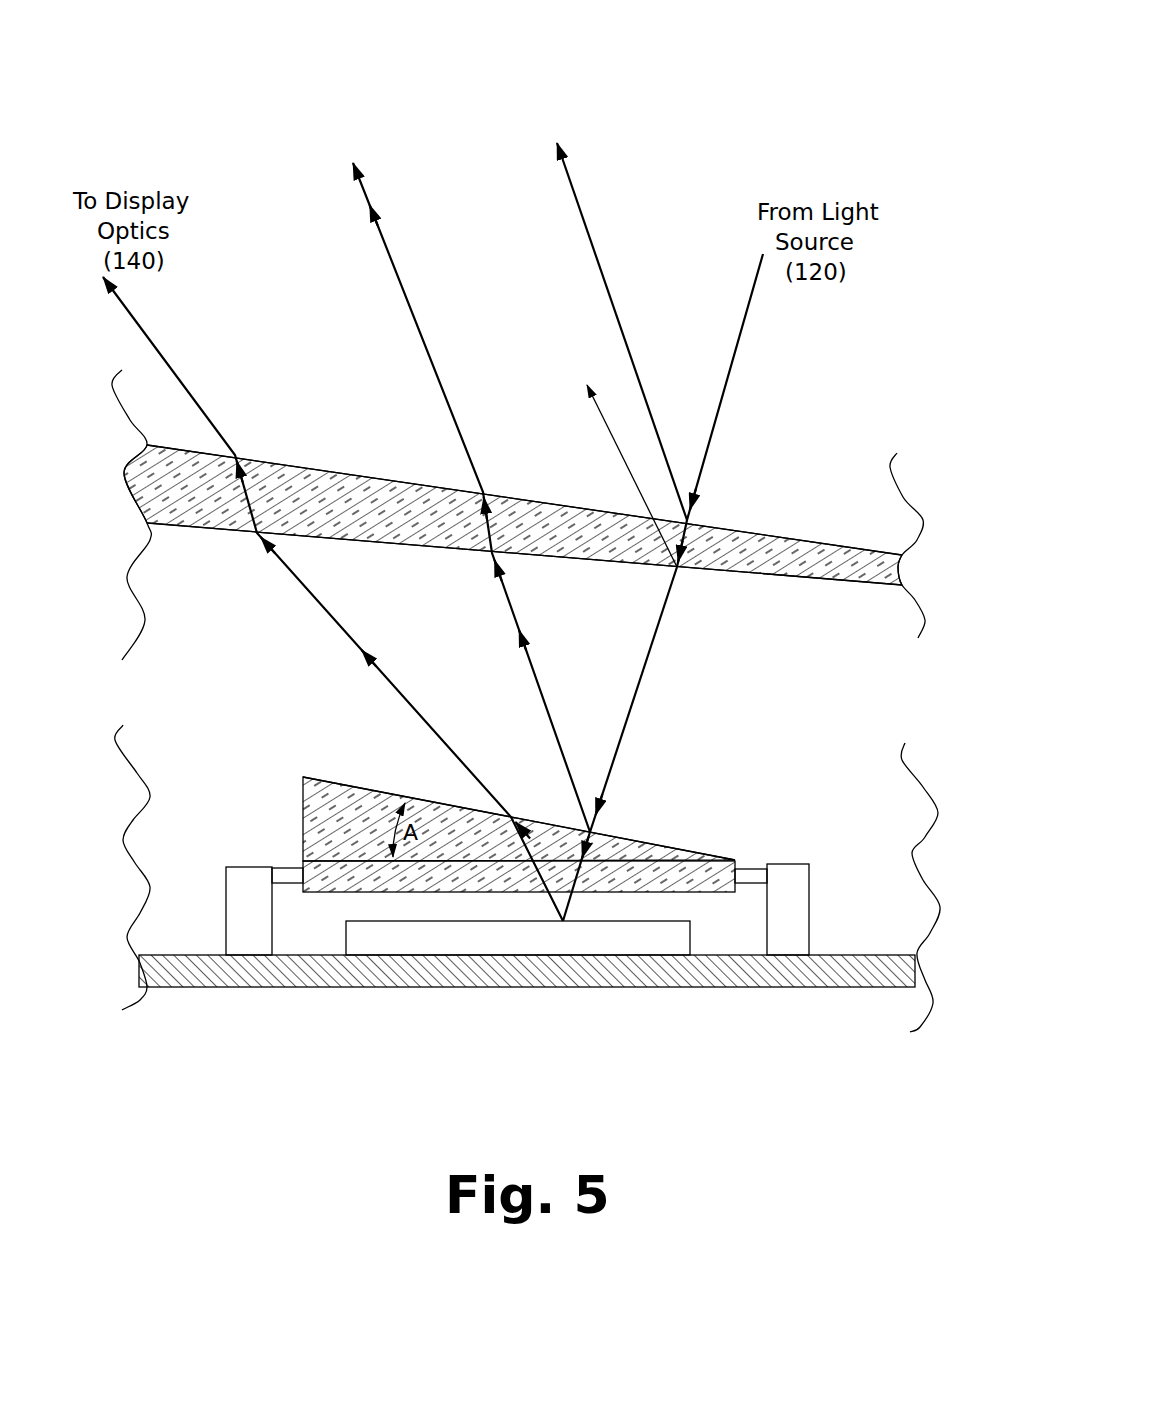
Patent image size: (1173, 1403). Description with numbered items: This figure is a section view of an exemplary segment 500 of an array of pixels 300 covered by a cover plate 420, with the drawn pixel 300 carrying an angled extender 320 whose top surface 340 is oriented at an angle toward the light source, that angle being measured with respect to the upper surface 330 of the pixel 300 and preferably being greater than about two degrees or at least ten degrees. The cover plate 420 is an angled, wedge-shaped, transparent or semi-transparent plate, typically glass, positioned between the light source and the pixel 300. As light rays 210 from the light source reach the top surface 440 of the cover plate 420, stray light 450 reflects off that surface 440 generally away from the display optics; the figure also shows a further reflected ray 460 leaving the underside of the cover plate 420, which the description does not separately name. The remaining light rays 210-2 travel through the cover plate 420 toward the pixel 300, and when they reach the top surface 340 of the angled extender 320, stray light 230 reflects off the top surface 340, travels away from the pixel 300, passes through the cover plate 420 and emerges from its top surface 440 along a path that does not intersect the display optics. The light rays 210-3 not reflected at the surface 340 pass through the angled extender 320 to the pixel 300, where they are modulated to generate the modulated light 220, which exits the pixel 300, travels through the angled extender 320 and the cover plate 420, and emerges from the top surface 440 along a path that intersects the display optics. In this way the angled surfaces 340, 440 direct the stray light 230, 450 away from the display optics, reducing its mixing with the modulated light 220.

The segment 500 is at (300, 98).
The pixel 300 is at (474, 992).
The angled extender 320 is at (330, 814).
The upper surface 330 is at (688, 868).
The top surface 340 is at (667, 835).
The cover plate 420 is at (190, 518).
The top surface 440 is at (752, 527).
The light rays 210 is at (745, 290).
The remaining light rays 210-2 is at (688, 535).
The remaining light rays 210-3 is at (600, 850).
The modulated light 220 is at (208, 338).
The stray light 230 is at (380, 207).
The stray light 450 is at (573, 178).
The reflected stray ray 460 is at (600, 428).